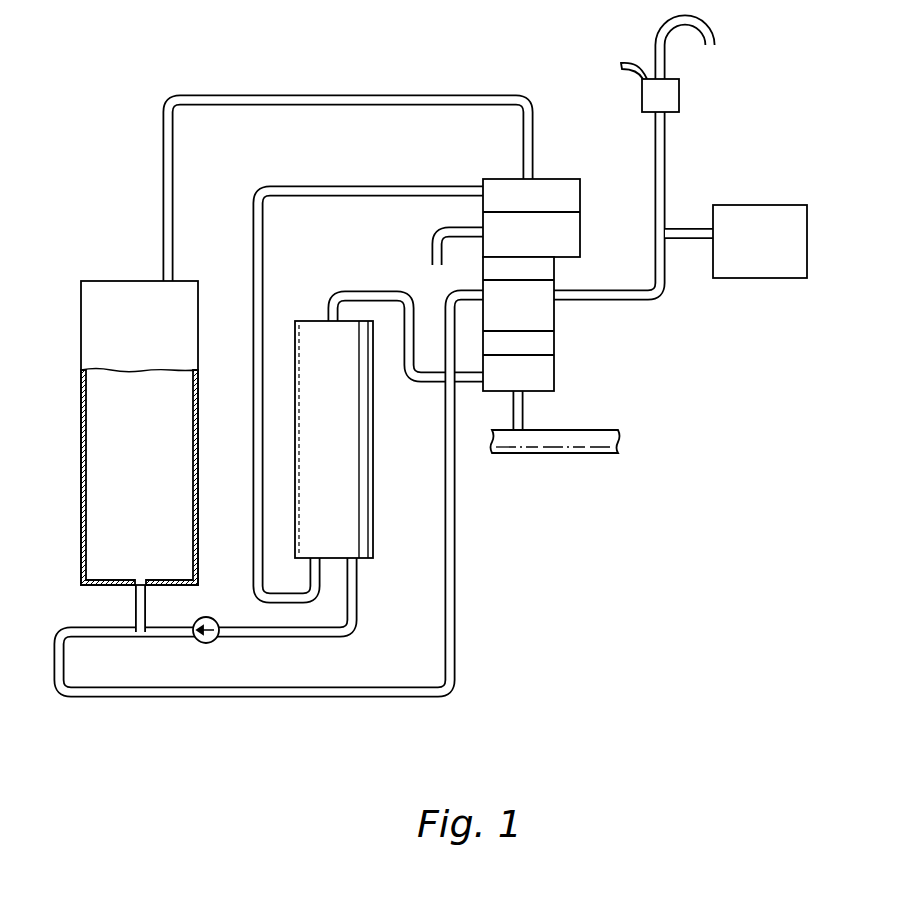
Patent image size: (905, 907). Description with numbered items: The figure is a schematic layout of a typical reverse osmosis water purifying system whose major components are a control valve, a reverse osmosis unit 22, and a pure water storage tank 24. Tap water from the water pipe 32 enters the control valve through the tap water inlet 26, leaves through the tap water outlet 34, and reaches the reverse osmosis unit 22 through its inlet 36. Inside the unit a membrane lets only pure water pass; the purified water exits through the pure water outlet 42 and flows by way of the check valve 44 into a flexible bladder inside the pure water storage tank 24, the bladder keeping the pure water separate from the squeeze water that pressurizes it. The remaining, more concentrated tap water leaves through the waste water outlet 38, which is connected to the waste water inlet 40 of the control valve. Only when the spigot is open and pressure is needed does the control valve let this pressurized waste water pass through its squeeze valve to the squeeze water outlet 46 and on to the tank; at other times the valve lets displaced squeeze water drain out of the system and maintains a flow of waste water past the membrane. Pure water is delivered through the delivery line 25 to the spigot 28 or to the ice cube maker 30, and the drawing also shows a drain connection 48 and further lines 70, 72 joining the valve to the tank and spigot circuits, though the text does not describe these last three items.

The reverse osmosis unit 22 is at (362, 530).
The pure water storage tank 24 is at (100, 503).
The delivery line 25 is at (667, 153).
The tap water inlet 26 is at (520, 410).
The spigot 28 is at (680, 92).
The ice cube maker 30 is at (752, 279).
The water pipe 32 is at (568, 454).
The tap water outlet 34 is at (428, 383).
The inlet 36 is at (346, 291).
The waste water outlet 38 is at (255, 585).
The waste water inlet 40 is at (392, 188).
The pure water outlet 42 is at (356, 608).
The check valve 44 is at (195, 638).
The squeeze water outlet 46 is at (495, 100).
The drain line 48 is at (453, 227).
The feed water line 70 is at (456, 537).
The spigot feed line 72 is at (612, 301).